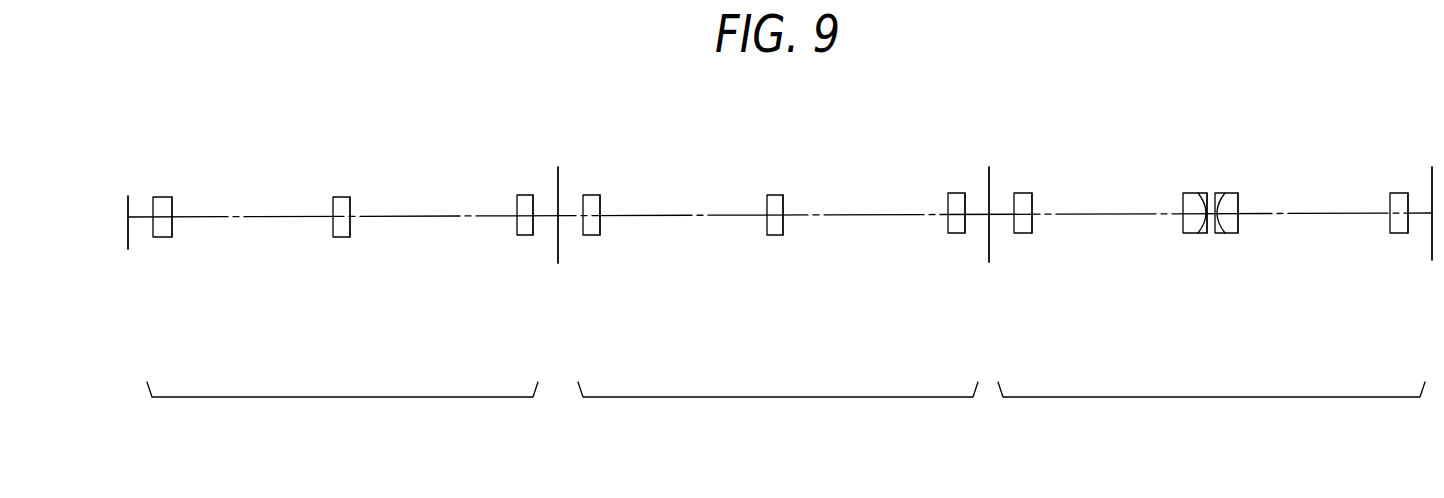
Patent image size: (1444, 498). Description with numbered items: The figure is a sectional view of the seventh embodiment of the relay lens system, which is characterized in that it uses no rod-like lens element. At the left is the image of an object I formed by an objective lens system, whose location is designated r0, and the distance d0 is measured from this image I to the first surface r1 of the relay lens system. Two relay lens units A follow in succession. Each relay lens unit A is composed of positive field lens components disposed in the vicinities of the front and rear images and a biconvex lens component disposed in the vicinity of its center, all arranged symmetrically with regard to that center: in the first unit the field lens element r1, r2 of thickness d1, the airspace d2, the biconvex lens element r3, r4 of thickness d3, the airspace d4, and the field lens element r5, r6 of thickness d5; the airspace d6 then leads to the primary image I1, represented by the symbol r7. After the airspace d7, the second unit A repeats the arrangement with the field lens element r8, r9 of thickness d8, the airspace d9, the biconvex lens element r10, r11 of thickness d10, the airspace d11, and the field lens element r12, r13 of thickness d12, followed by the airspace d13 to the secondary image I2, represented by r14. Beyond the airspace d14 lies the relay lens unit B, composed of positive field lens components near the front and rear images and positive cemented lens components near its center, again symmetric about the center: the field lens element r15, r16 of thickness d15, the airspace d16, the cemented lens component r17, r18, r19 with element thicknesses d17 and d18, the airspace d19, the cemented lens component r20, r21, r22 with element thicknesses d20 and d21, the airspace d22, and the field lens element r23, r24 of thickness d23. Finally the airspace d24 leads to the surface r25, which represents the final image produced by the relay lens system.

The image of an object I is at (128, 251).
The primary image I1 is at (558, 264).
The secondary image I2 is at (989, 263).
The relay lens unit A is at (562, 408).
The relay lens unit B is at (1211, 408).
The image of an object r0 is at (128, 182).
The first surface of the relay lens system r1 is at (153, 200).
The lens surface r2 is at (172, 200).
The lens surface r3 is at (333, 200).
The lens surface r4 is at (350, 200).
The lens surface r5 is at (517, 198).
The lens surface r6 is at (534, 200).
The primary image surface r7 is at (558, 185).
The lens surface r8 is at (583, 200).
The lens surface r9 is at (600, 200).
The lens surface r10 is at (767, 198).
The lens surface r11 is at (783, 198).
The lens surface r12 is at (948, 197).
The lens surface r13 is at (965, 195).
The secondary image surface r14 is at (989, 168).
The lens surface r15 is at (1014, 196).
The lens surface r16 is at (1032, 196).
The lens surface r17 is at (1183, 196).
The lens surface r18 is at (1198, 196).
The lens surface r19 is at (1208, 196).
The lens surface r20 is at (1215, 196).
The lens surface r21 is at (1225, 196).
The lens surface r22 is at (1240, 196).
The lens surface r23 is at (1390, 196).
The lens surface r24 is at (1408, 196).
The final image surface r25 is at (1432, 168).
The distance from image of object to first surface d0 is at (140, 217).
The lens thickness d1 is at (163, 218).
The airspace d2 is at (235, 218).
The lens thickness d3 is at (343, 236).
The airspace d4 is at (413, 218).
The lens thickness d5 is at (523, 226).
The airspace d6 is at (548, 218).
The airspace d7 is at (570, 218).
The lens thickness d8 is at (596, 222).
The airspace d9 is at (678, 218).
The lens thickness d10 is at (777, 218).
The airspace d11 is at (847, 218).
The lens thickness d12 is at (953, 225).
The airspace d13 is at (975, 215).
The airspace d14 is at (1000, 215).
The lens thickness d15 is at (1030, 230).
The airspace d16 is at (1100, 215).
The lens thickness d17 is at (1190, 212).
The lens thickness d18 is at (1207, 235).
The airspace d19 is at (1212, 215).
The lens thickness d20 is at (1220, 213).
The lens thickness d21 is at (1235, 222).
The airspace d22 is at (1323, 215).
The lens thickness d23 is at (1398, 233).
The airspace d24 is at (1423, 215).